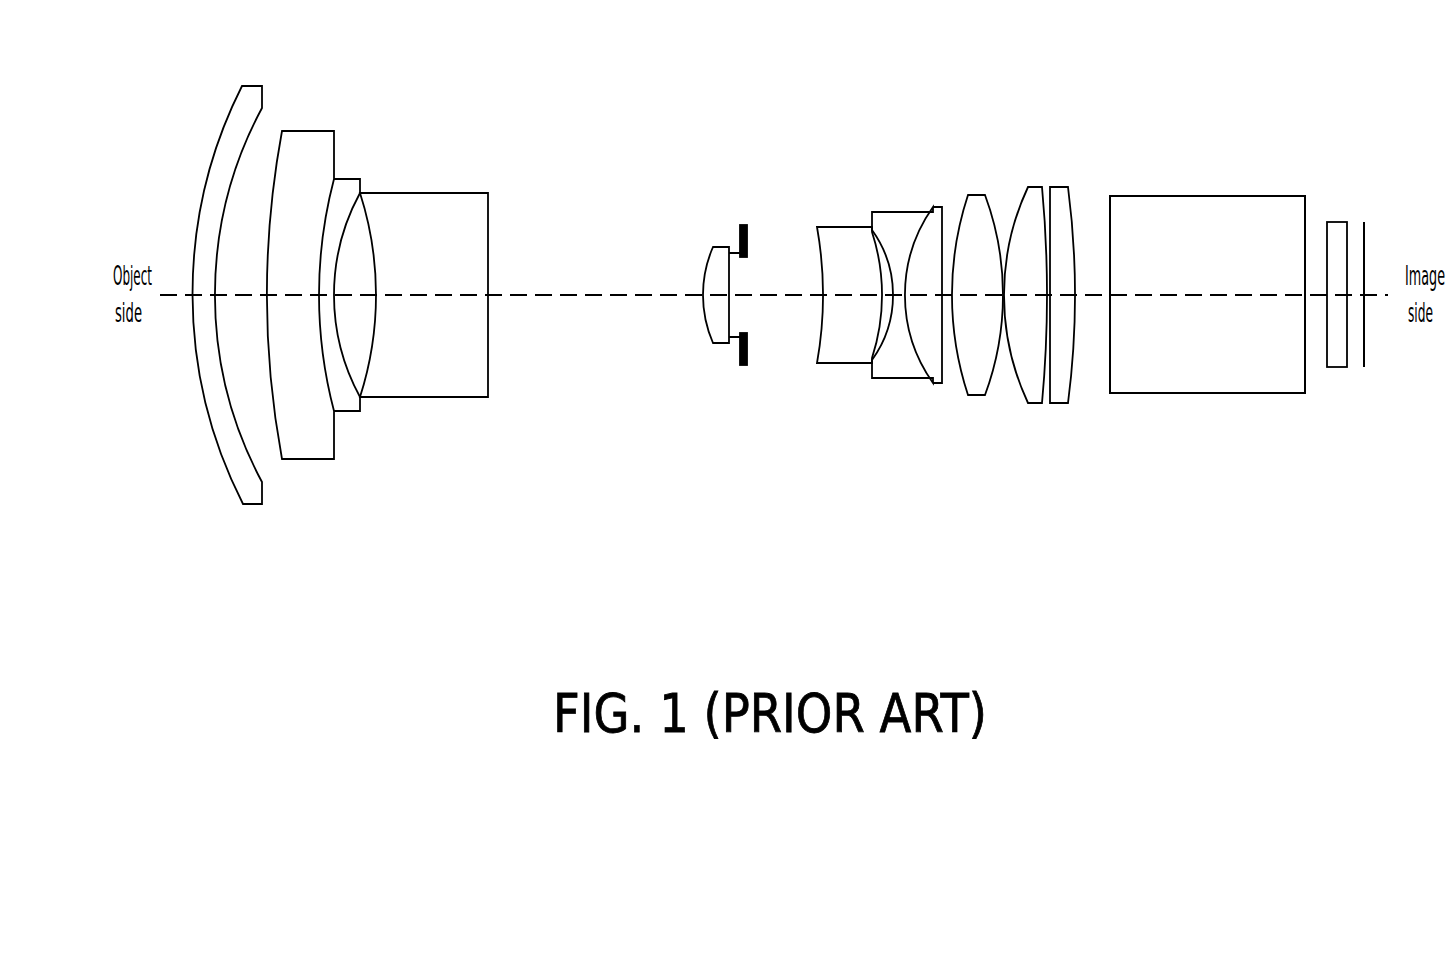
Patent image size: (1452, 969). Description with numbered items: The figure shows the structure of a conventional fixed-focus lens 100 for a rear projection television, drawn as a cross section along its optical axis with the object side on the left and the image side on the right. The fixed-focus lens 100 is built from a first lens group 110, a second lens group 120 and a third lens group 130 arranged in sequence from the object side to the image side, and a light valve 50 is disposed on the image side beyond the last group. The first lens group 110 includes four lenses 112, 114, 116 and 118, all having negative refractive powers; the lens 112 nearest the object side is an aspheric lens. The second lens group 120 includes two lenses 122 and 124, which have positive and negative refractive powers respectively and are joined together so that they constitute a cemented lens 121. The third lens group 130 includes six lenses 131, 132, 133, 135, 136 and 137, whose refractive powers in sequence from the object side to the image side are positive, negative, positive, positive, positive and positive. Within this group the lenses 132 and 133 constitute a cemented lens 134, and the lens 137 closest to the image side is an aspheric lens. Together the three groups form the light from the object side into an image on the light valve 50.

The light valve 50 is at (1366, 342).
The fixed-focus lens 100 is at (1270, 549).
The first lens group 110 is at (462, 578).
The lens 112 is at (252, 492).
The lens 114 is at (310, 442).
The lens 116 is at (345, 402).
The lens 118 is at (428, 387).
The second lens group 120 is at (687, 398).
The cemented lens 121 is at (713, 518).
The lens 122 is at (722, 325).
The lens 124 is at (737, 337).
The third lens group 130 is at (1078, 577).
The lens 131 is at (843, 355).
The lens 132 is at (890, 368).
The lens 133 is at (938, 383).
The cemented lens 134 is at (895, 518).
The lens 135 is at (977, 380).
The lens 136 is at (1028, 387).
The lens 137 is at (1062, 388).